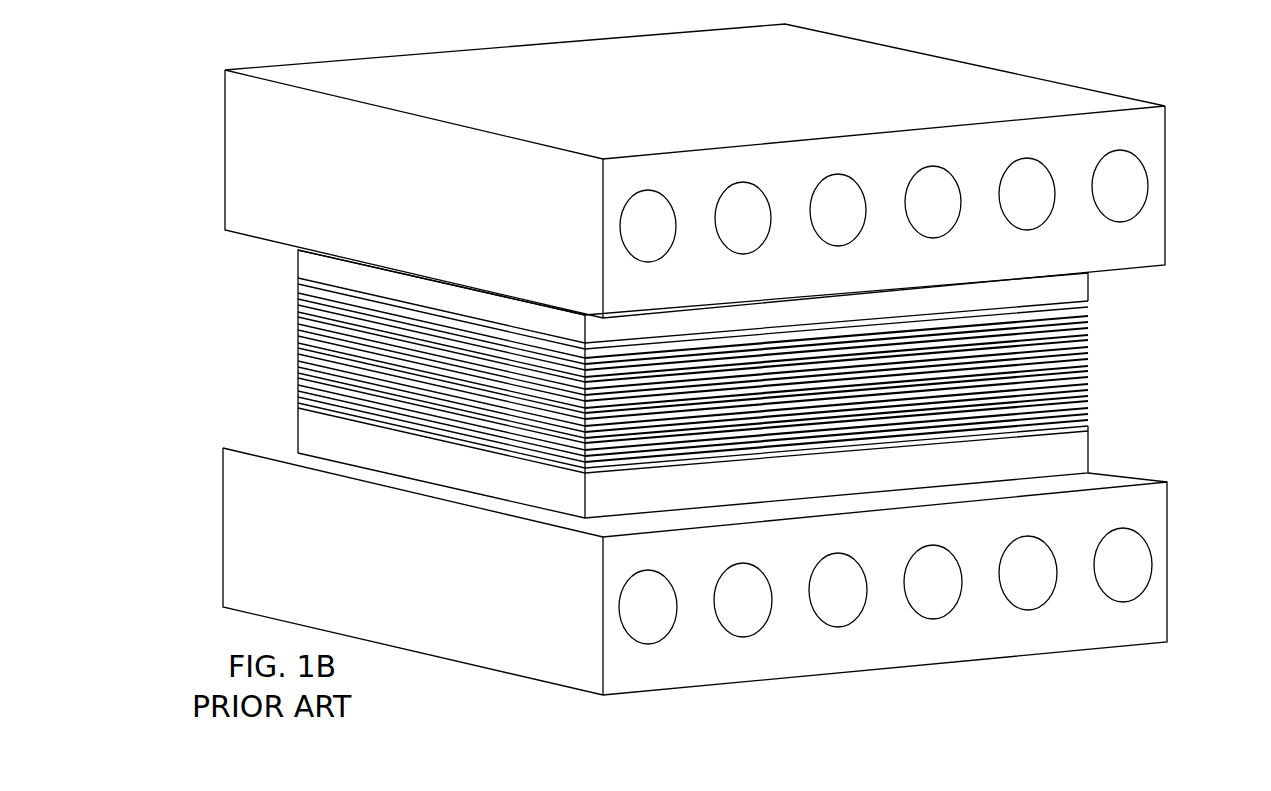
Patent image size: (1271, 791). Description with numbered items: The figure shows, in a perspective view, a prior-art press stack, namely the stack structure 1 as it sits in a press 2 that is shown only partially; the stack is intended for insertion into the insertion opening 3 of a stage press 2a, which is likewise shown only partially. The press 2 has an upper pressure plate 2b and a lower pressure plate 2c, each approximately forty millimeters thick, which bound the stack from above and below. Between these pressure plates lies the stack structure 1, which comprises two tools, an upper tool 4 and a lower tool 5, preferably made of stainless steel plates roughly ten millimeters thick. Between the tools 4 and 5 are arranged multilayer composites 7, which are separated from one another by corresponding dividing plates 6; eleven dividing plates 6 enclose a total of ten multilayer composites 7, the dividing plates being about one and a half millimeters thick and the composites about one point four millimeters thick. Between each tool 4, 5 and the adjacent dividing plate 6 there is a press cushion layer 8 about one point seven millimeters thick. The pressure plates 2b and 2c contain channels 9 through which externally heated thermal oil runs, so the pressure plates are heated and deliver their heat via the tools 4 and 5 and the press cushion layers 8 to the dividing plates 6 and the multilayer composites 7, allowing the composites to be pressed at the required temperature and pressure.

The stack structure 1 is at (1173, 263).
The press 2 is at (1160, 77).
The stage press 2a is at (695, 359).
The upper pressure plate 2b is at (706, 98).
The lower pressure plate 2c is at (402, 580).
The insertion opening 3 is at (260, 363).
The upper tool 4 is at (1080, 288).
The lower tool 5 is at (1081, 453).
The dividing plate 6 is at (1088, 308).
The multilayer composite 7 is at (1055, 348).
The press cushion layer 8 is at (1068, 302).
The channel 9 is at (655, 239).